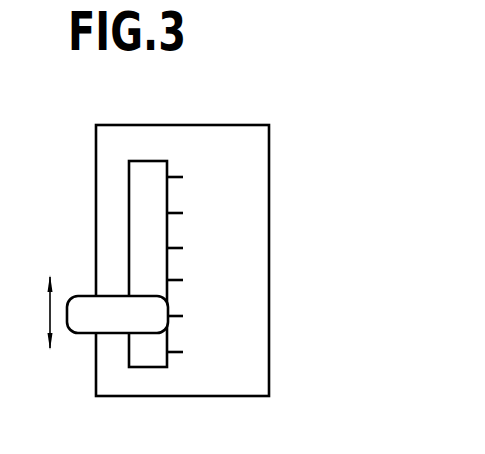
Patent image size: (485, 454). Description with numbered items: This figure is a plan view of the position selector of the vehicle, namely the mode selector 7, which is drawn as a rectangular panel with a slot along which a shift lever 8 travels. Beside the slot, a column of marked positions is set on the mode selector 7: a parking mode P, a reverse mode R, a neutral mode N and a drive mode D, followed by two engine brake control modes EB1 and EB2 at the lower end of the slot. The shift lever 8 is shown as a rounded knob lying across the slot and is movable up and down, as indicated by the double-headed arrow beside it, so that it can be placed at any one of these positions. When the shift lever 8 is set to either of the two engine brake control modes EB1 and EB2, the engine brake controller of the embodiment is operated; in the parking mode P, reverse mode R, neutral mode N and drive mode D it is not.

The mode selector 7 is at (182, 238).
The shift lever 8 is at (80, 296).
The parking mode P is at (184, 178).
The reverse mode R is at (184, 214).
The neutral mode N is at (184, 249).
The drive mode D is at (184, 281).
The engine brake control mode EB1 is at (196, 317).
The engine brake control mode EB2 is at (198, 353).